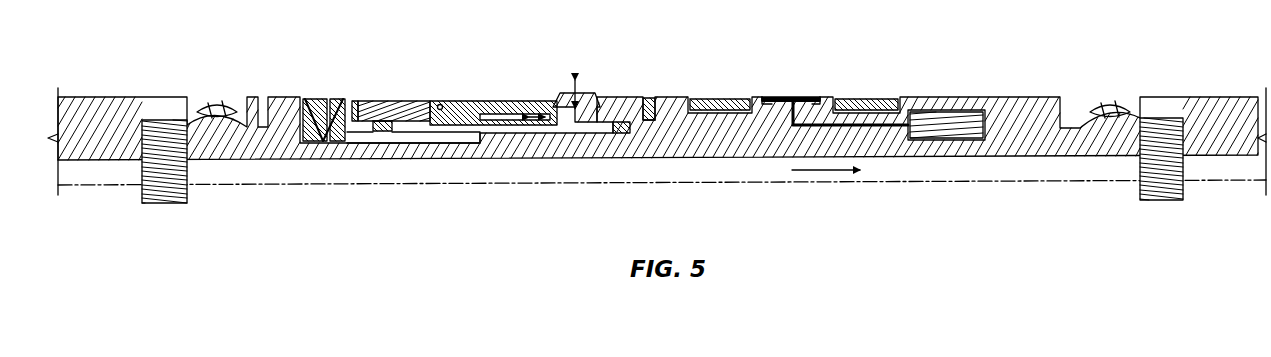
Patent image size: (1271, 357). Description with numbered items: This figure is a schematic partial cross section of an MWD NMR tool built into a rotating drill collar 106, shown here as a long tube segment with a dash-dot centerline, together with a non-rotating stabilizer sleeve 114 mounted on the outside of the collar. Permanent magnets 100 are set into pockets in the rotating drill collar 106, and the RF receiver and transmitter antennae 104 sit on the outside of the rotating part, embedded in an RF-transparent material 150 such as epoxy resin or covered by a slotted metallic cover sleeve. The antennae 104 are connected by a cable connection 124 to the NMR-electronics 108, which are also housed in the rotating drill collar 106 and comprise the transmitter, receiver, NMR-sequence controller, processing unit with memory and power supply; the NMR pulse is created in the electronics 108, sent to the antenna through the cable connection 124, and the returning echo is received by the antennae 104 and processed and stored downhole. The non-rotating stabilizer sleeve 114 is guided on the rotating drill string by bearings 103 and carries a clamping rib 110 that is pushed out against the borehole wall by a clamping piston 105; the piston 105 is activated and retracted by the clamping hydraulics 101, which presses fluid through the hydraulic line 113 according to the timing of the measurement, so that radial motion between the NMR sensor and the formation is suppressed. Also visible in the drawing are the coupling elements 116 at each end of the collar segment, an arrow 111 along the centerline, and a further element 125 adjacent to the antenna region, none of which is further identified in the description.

The permanent magnets 100 is at (730, 98).
The clamping hydraulics 101 is at (317, 104).
The bearings 103 is at (357, 100).
The RF receiver and transmitter antennae 104 is at (802, 97).
The clamping piston 105 is at (527, 112).
The drill collar 106 is at (503, 150).
The NMR-electronics 108 is at (933, 115).
The clamping rib 110 is at (593, 93).
The flow direction 111 is at (820, 171).
The hydraulic line 113 is at (383, 140).
The non-rotating stabilizer sleeve 114 is at (368, 102).
The tubing coupling 116 is at (158, 103).
The cable connection 124 is at (800, 128).
The plate edge 125 is at (815, 97).
The RF-transparent material 150 is at (780, 97).